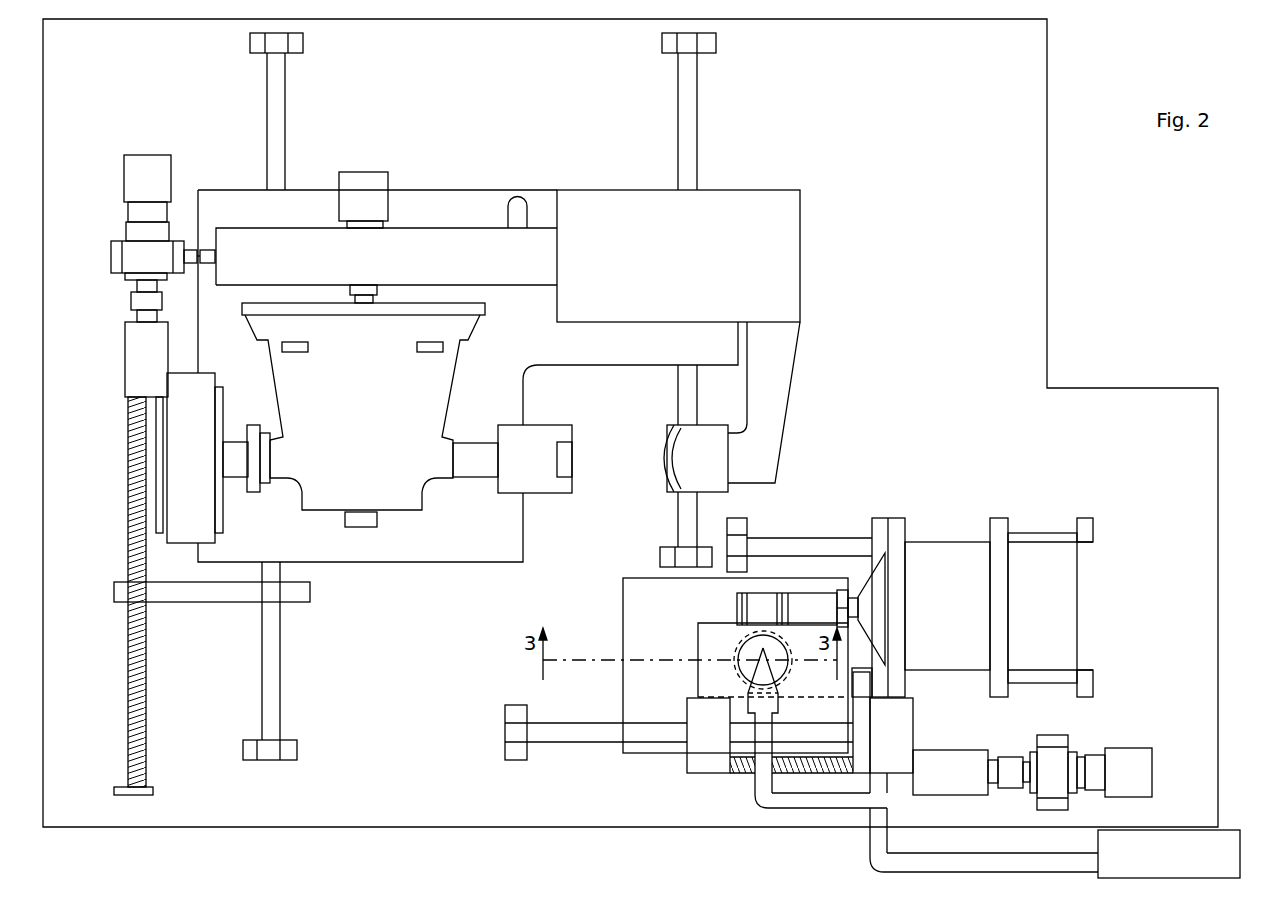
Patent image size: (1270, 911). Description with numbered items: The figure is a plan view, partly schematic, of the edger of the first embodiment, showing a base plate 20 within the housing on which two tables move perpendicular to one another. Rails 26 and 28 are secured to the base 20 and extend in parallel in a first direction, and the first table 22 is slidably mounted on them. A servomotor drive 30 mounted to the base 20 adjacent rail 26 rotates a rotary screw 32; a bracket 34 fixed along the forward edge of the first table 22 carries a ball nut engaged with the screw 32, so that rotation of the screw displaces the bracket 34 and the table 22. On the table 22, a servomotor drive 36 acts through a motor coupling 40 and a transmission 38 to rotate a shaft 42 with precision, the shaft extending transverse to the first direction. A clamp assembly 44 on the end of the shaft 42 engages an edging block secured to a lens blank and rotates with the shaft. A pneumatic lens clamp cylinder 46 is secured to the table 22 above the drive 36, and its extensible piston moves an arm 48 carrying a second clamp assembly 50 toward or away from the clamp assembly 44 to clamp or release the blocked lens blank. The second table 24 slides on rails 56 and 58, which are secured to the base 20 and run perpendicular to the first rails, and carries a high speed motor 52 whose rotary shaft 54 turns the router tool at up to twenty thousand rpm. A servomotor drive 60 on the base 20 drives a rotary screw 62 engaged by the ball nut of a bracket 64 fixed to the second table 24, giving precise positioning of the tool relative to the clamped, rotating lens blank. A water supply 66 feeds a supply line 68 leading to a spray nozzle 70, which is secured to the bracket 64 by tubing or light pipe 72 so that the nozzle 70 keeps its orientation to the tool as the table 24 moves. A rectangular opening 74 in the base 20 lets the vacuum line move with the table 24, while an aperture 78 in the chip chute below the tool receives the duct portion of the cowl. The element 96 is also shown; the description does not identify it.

The base plate 20 is at (1030, 216).
The first table 22 is at (461, 190).
The second table 24 is at (1030, 538).
The rail 26 is at (275, 105).
The rail 28 is at (688, 106).
The servomotor drive 30 is at (112, 207).
The rotary screw 32 is at (128, 540).
The bracket 34 is at (305, 590).
The servomotor drive 36 is at (365, 180).
The transmission 38 is at (445, 400).
The motor coupling 40 is at (375, 298).
The shaft 42 is at (488, 468).
The clamp assembly 44 is at (562, 423).
The pneumatic lens clamp cylinder 46 is at (277, 240).
The arm 48 is at (777, 416).
The second clamp assembly 50 is at (668, 497).
The high speed motor 52 is at (944, 553).
The rotary shaft 54 is at (873, 560).
The rail 56 is at (768, 538).
The rail 58 is at (595, 737).
The servomotor drive 60 is at (1128, 757).
The rotary screw 62 is at (740, 775).
The bracket 64 is at (873, 785).
The water supply 66 is at (1157, 867).
The supply line 68 is at (1037, 862).
The spray nozzle 70 is at (747, 675).
The tubing or light pipe 72 is at (828, 810).
The rectangular opening 74 is at (632, 627).
The aperture 78 is at (748, 657).
The coupling 96 is at (843, 590).